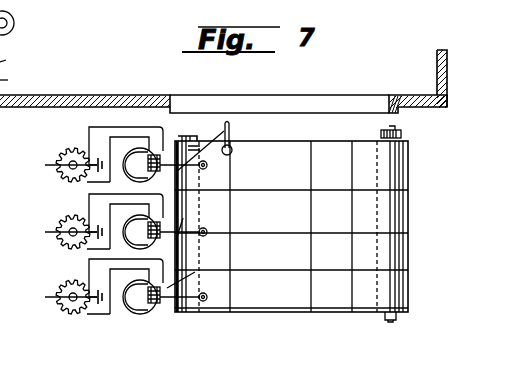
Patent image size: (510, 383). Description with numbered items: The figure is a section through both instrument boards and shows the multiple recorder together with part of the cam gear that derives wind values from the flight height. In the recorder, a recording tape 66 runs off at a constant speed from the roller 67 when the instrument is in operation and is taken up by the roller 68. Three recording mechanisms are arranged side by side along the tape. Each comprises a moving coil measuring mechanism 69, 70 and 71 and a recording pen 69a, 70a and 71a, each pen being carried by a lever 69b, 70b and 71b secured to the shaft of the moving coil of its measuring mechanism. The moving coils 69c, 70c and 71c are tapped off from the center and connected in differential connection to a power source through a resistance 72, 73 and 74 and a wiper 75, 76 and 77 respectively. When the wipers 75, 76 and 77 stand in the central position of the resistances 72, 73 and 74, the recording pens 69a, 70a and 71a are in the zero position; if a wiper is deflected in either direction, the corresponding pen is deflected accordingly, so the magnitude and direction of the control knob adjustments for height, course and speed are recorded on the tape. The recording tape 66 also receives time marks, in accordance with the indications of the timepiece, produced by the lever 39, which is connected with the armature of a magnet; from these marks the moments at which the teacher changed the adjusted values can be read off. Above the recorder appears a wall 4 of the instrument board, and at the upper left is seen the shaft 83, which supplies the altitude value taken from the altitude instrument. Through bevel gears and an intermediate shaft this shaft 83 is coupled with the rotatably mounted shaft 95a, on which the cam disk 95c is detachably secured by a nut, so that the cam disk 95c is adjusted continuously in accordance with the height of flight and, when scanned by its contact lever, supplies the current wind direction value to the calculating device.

The frame wall 4 is at (53, 108).
The shaft 83 is at (8, 23).
The rotatably mounted shaft 95a is at (6, 60).
The cam disk 95c is at (8, 80).
The recording tape 66 is at (292, 160).
The roller 67 is at (186, 131).
The lever 39 is at (216, 138).
The lever 71b is at (219, 146).
The roller 68 is at (397, 317).
The moving coil measuring mechanism 71 is at (108, 124).
The recording pen 71a is at (207, 165).
The moving coil 71c is at (150, 178).
The resistance 74 is at (57, 155).
The wiper 77 is at (45, 165).
The moving coil measuring mechanism 70 is at (125, 245).
The recording pen 70a is at (207, 232).
The lever 70b is at (183, 218).
The moving coil 70c is at (140, 222).
The resistance 73 is at (57, 222).
The wiper 76 is at (45, 232).
The moving coil measuring mechanism 69 is at (128, 312).
The recording pen 69a is at (207, 297).
The lever 69b is at (195, 272).
The moving coil 69c is at (152, 310).
The resistance 72 is at (57, 287).
The wiper 75 is at (45, 297).